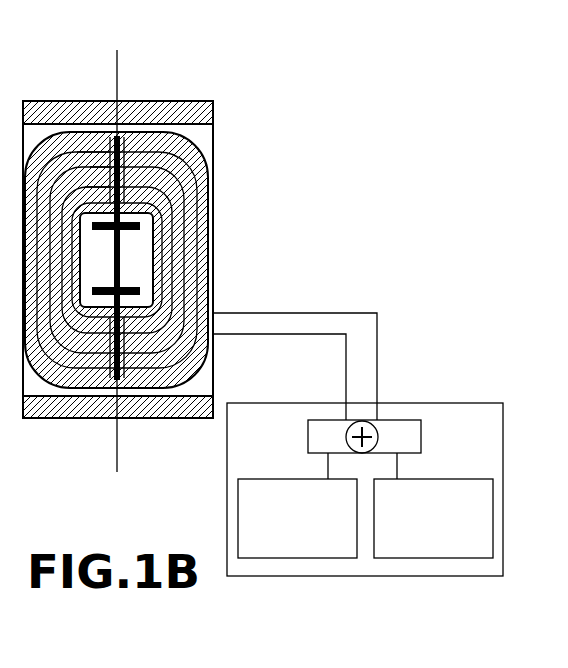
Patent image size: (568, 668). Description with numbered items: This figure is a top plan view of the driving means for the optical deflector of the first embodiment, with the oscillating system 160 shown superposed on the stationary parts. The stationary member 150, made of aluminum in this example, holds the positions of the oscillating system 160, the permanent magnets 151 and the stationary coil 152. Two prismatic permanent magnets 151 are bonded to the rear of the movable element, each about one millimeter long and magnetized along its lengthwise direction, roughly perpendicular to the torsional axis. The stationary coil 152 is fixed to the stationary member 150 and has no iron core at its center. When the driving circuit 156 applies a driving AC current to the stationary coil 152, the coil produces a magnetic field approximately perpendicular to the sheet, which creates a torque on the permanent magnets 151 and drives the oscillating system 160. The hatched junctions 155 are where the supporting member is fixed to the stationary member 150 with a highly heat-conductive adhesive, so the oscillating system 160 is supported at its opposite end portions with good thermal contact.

The stationary member 150 is at (215, 135).
The permanent magnets 151 is at (140, 224).
The stationary coil 152 is at (215, 173).
The junctions 155 is at (213, 101).
The driving circuit 156 is at (365, 511).
The oscillating system 160 is at (188, 243).